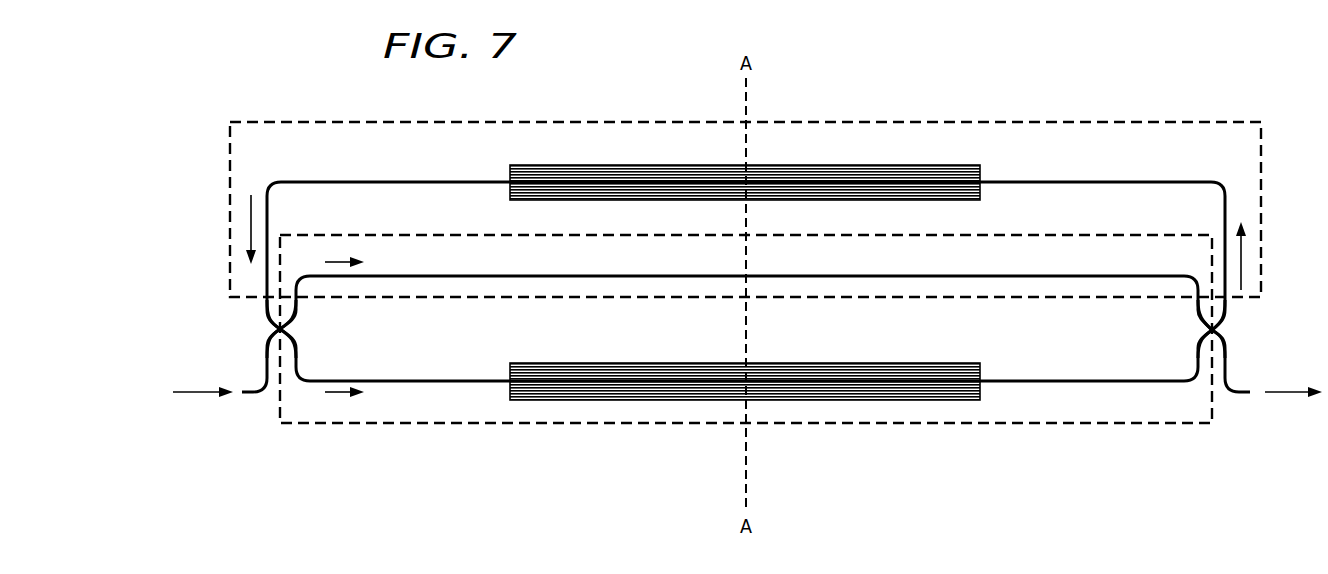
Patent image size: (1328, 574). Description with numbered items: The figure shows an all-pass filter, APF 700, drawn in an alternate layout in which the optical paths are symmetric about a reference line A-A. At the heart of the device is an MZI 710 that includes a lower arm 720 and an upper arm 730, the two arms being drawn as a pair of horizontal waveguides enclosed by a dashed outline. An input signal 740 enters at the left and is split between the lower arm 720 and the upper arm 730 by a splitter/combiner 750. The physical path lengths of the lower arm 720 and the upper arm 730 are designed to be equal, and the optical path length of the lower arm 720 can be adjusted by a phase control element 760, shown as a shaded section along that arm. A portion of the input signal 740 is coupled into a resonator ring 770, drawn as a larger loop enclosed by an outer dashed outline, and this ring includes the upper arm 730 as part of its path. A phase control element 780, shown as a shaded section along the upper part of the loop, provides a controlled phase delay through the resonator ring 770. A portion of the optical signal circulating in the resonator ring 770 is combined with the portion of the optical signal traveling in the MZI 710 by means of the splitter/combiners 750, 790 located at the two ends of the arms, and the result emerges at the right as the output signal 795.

The APF 700 is at (152, 92).
The MZI 710 is at (364, 424).
The lower arm 720 is at (1070, 381).
The upper arm 730 is at (568, 276).
The input signal 740 is at (196, 394).
The splitter/combiner 750 is at (276, 329).
The phase control element 760 is at (511, 369).
The resonator ring 770 is at (230, 161).
The phase control element 780 is at (511, 171).
The splitter/combiner 790 is at (1216, 330).
The output signal 795 is at (1300, 394).